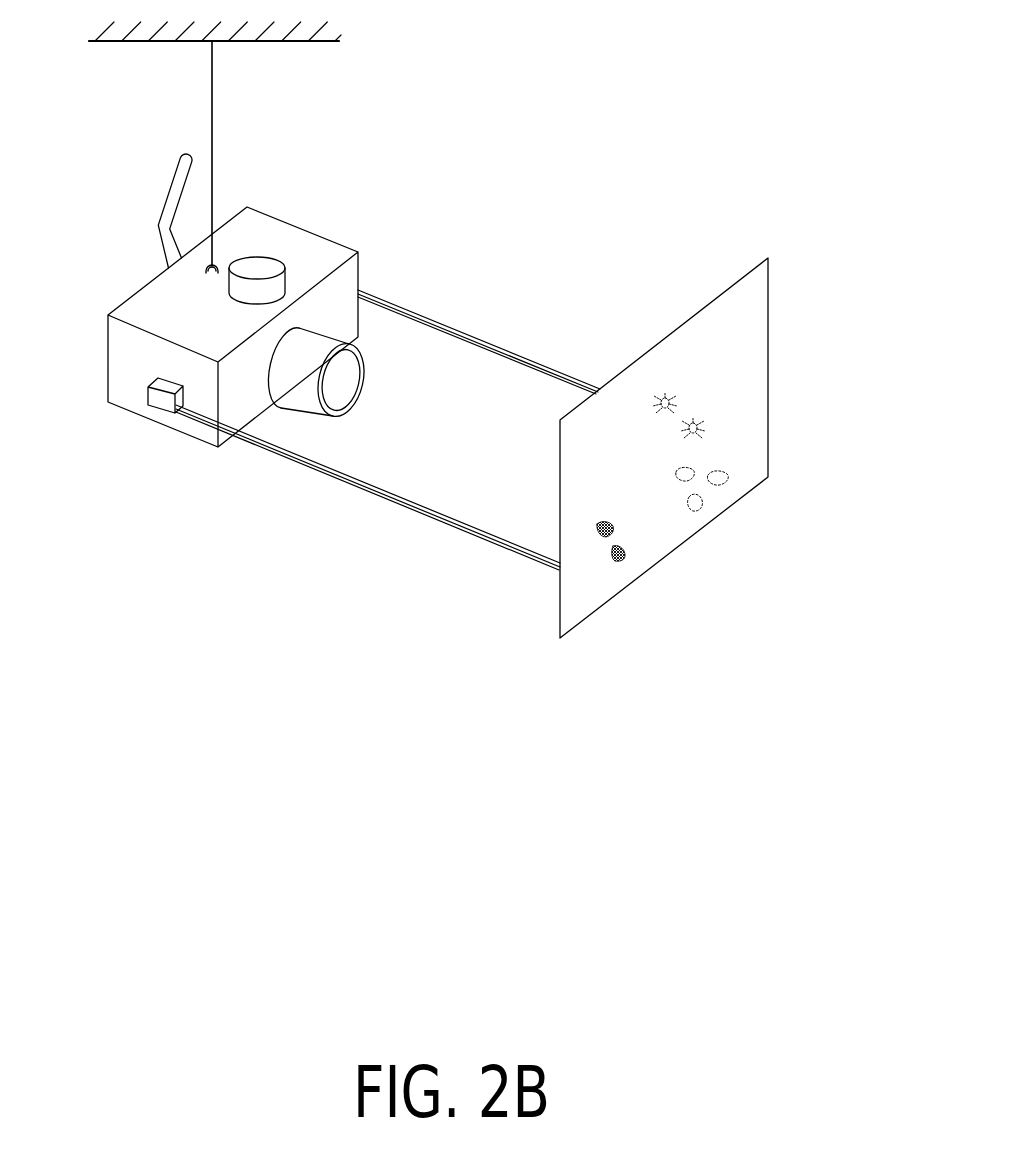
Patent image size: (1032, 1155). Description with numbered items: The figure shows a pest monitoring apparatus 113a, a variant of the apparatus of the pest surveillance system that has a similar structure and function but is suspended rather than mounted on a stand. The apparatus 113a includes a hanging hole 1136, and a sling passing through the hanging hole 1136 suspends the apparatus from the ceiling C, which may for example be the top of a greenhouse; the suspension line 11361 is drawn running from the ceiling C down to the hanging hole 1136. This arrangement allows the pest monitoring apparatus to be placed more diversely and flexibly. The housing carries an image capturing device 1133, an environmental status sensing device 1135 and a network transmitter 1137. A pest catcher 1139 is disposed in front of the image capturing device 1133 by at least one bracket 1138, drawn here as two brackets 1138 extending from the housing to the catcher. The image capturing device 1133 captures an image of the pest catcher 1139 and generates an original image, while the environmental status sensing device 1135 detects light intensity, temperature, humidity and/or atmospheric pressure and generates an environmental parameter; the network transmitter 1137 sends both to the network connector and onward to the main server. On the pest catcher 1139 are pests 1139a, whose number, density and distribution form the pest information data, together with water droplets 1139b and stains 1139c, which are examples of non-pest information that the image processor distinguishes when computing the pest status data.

The pest monitoring apparatus 113a is at (790, 93).
The ceiling C is at (298, 42).
The hanging cord 11361 is at (212, 97).
The hanging hole 1136 is at (205, 268).
The network transmitter 1137 is at (173, 183).
The environmental status sensing device 1135 is at (262, 270).
The image capturing device 1133 is at (313, 347).
The bracket 1138 is at (516, 352).
The pest catcher 1139 is at (770, 323).
The pests 1139a is at (662, 390).
The water droplets 1139b is at (727, 477).
The stains 1139c is at (623, 562).